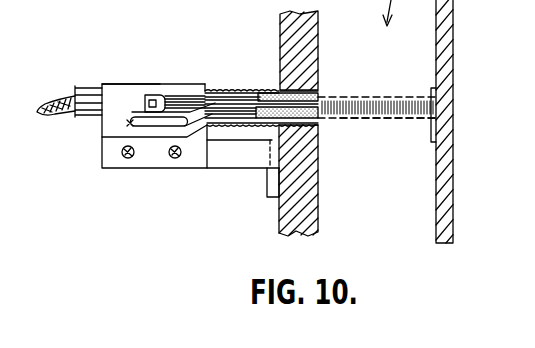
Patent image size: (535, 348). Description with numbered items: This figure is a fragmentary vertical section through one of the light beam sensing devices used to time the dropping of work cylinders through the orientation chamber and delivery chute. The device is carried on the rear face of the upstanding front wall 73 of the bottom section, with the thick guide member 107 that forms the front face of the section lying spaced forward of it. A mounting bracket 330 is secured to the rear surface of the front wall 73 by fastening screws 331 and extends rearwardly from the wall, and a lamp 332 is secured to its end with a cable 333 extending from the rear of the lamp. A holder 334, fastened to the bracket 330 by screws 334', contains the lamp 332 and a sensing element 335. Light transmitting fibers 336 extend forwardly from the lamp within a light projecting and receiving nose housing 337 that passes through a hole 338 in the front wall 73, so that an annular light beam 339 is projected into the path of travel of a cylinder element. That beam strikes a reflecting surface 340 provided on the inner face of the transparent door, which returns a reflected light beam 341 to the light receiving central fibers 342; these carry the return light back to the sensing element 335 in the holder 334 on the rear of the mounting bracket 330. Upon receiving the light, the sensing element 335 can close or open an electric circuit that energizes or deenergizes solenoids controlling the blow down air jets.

The front wall 73 is at (312, 30).
The guide member 107 is at (455, 192).
The mounting bracket 330 is at (242, 158).
The fastening screws 331 is at (268, 187).
The lamp 332 is at (162, 96).
The cable 333 is at (50, 94).
The holder 334 is at (114, 139).
The screws 334' is at (149, 178).
The sensing element 335 is at (162, 82).
The light transmitting fibers 336 is at (253, 91).
The nose housing 337 is at (220, 90).
The hole 338 is at (318, 127).
The annular light beam 339 is at (346, 98).
The reflecting surface 340 is at (432, 88).
The reflected light beam 341 is at (372, 110).
The light receiving central fibers 342 is at (228, 104).